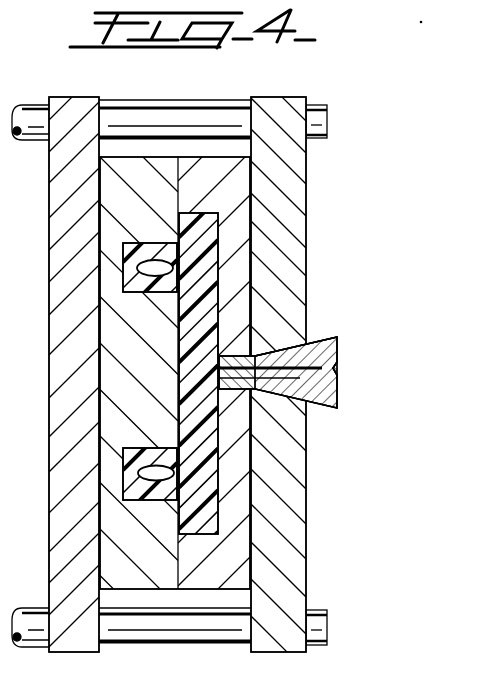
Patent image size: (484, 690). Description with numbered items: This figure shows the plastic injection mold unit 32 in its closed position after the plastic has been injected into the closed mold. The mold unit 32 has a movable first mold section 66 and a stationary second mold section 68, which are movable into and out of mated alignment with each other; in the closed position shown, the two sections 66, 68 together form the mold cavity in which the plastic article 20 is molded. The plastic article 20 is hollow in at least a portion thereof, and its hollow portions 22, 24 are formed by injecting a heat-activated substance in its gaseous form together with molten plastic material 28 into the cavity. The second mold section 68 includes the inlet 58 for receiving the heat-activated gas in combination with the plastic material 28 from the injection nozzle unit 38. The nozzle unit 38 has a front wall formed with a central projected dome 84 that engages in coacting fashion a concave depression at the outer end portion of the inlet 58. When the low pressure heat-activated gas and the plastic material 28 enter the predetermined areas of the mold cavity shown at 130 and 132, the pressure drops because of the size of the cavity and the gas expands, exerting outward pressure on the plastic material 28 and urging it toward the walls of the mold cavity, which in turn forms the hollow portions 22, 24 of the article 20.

The plastic injection mold unit 32 is at (208, 95).
The first mold section 66 is at (105, 183).
The second mold section 68 is at (232, 188).
The plastic article 20 is at (218, 247).
The plastic material 28 is at (207, 270).
The hollow portion 22 is at (150, 262).
The hollow portion 24 is at (148, 480).
The predetermined area of the mold cavity 130 is at (133, 243).
The predetermined area of the mold cavity 132 is at (133, 448).
The injection nozzle unit 38 is at (345, 333).
The inlet 58 is at (300, 346).
The central projected dome 84 is at (341, 372).